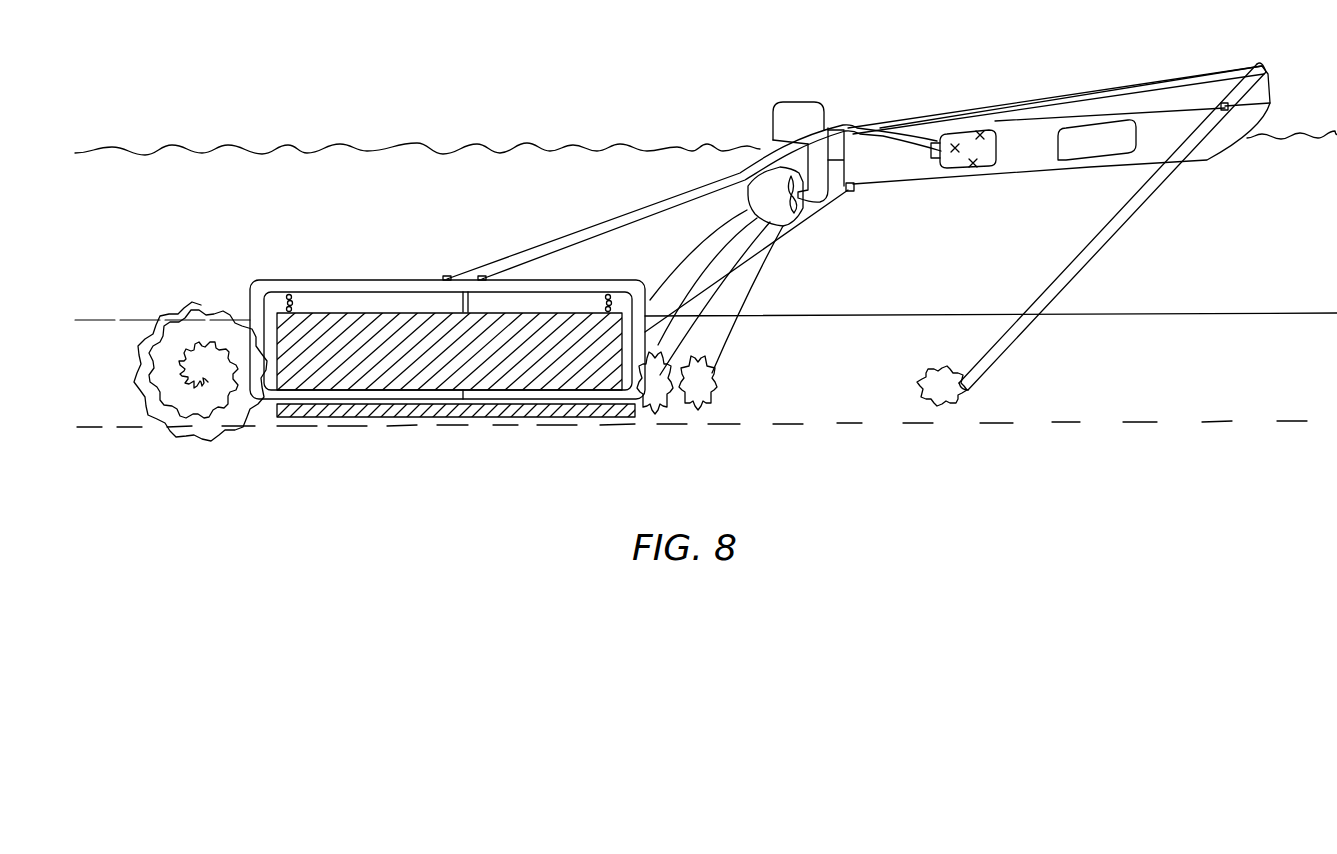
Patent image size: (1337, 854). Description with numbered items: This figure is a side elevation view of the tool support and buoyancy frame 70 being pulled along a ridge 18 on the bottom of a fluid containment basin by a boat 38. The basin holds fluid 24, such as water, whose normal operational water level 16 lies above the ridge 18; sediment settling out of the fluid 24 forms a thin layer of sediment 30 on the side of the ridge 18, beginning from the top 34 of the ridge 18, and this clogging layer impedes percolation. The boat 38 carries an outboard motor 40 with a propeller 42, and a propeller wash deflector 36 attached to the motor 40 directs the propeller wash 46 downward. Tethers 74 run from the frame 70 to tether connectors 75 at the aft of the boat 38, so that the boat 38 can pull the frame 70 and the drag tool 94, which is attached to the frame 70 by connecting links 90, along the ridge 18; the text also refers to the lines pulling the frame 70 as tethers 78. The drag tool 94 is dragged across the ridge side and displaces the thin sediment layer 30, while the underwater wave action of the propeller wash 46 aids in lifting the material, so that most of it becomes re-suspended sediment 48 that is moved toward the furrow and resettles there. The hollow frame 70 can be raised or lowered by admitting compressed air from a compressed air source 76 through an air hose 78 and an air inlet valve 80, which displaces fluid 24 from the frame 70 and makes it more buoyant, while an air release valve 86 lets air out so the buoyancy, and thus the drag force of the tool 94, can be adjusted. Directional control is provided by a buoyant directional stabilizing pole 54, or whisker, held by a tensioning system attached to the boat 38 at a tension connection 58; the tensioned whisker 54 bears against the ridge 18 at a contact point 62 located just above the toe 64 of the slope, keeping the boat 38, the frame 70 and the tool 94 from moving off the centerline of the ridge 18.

The operational water level 16 is at (506, 152).
The ridge 18 is at (1222, 372).
The fluid 24 is at (310, 180).
The thin layer of sediment 30 is at (1101, 370).
The top of ridge 34 is at (1125, 313).
The propeller wash deflector 36 is at (760, 200).
The boat 38 is at (1213, 142).
The outboard motor 40 is at (792, 114).
The propeller 42 is at (771, 170).
The propeller wash 46 is at (743, 289).
The re-suspended sediment 48 is at (178, 335).
The directional stabilizing pole 54 is at (1143, 192).
The tension connection 58 is at (928, 125).
The contact point 62 is at (968, 391).
The toe 64 is at (1280, 421).
The tool support and buoyancy frame 70 is at (307, 278).
The tether 74 is at (826, 208).
The tether connector 75 is at (858, 192).
The compressed air source 76 is at (1088, 148).
The air hose 78 is at (572, 236).
The air inlet valve 80 is at (1002, 142).
The air release valve 86 is at (956, 146).
The connecting link 90 is at (612, 300).
The drag tool 94 is at (405, 280).